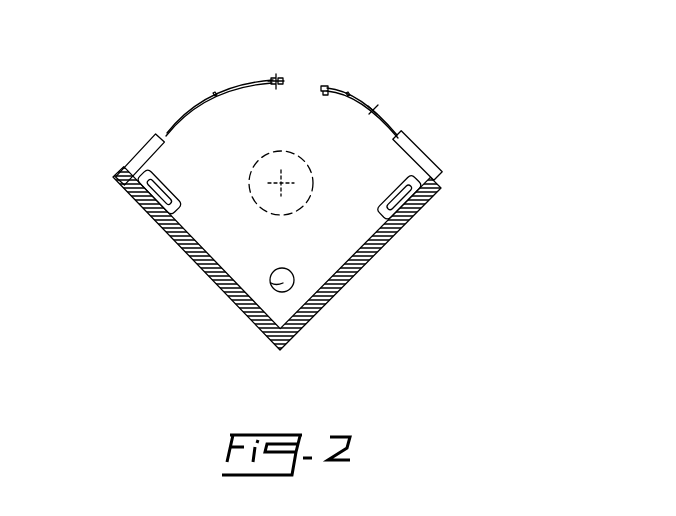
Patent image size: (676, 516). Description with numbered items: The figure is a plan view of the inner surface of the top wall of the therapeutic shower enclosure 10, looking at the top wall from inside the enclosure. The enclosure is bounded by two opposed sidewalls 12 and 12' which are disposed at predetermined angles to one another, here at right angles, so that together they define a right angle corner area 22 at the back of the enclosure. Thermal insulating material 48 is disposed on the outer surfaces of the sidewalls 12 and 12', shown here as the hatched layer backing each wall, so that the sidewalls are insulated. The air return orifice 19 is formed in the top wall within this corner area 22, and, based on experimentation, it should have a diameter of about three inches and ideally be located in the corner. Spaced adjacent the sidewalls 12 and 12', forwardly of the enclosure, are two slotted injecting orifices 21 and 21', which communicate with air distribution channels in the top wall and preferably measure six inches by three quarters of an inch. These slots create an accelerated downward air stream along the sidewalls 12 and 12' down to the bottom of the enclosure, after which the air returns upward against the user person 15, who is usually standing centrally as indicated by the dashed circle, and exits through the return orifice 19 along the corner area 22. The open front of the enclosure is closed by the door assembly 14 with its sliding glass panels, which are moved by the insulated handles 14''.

The therapeutic shower enclosure 10 is at (153, 98).
The sidewall 12 is at (174, 291).
The sidewall 12' is at (390, 279).
The door assembly 14 is at (225, 68).
The insulated handles 14'' is at (361, 86).
The user person 15 is at (296, 154).
The air return orifice 19 is at (283, 283).
The slotted injecting orifice 21 is at (126, 212).
The slotted injecting orifice 21' is at (449, 168).
The corner area 22 is at (290, 306).
The thermal insulating material 48 is at (226, 286).